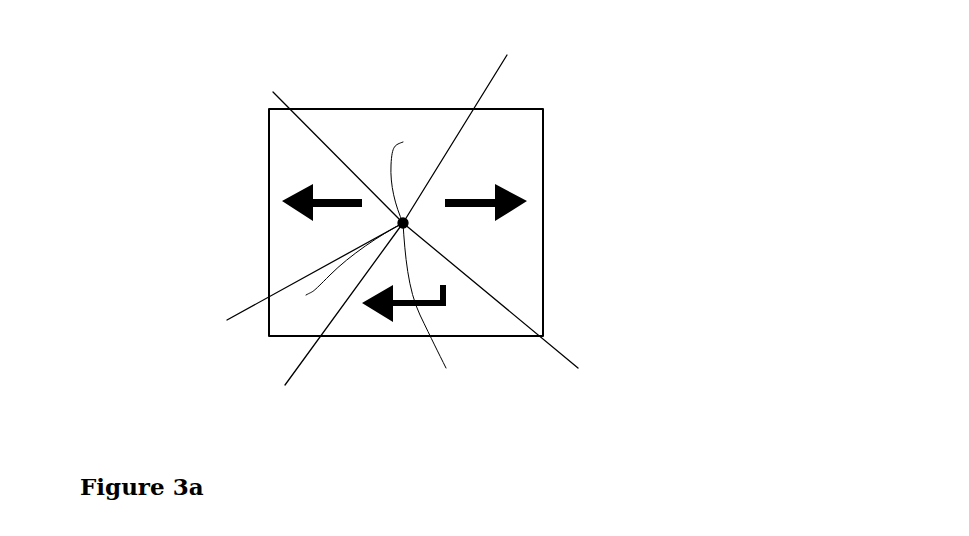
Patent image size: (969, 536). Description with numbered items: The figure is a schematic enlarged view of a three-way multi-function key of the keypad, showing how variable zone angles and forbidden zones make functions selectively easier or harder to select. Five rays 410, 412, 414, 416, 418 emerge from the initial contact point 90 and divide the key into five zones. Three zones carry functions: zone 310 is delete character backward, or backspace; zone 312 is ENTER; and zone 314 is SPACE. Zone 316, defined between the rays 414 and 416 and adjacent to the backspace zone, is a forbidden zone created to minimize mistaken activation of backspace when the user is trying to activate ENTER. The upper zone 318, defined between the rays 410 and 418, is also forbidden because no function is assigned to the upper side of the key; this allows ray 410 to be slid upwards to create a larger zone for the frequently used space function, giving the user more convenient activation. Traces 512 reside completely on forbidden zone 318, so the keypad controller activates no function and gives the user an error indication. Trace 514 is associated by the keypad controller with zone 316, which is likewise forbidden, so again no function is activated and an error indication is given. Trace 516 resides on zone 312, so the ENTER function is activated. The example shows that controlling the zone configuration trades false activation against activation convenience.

The initial contact point 90 is at (417, 224).
The zone 310 is at (292, 243).
The zone 312 is at (416, 318).
The zone 314 is at (505, 163).
The zone 316 is at (289, 318).
The zone 318 is at (417, 148).
The ray 410 is at (507, 55).
The ray 412 is at (585, 375).
The ray 414 is at (283, 387).
The ray 416 is at (227, 320).
The ray 418 is at (267, 87).
The traces 512 is at (390, 145).
The trace 514 is at (302, 295).
The trace 516 is at (445, 366).